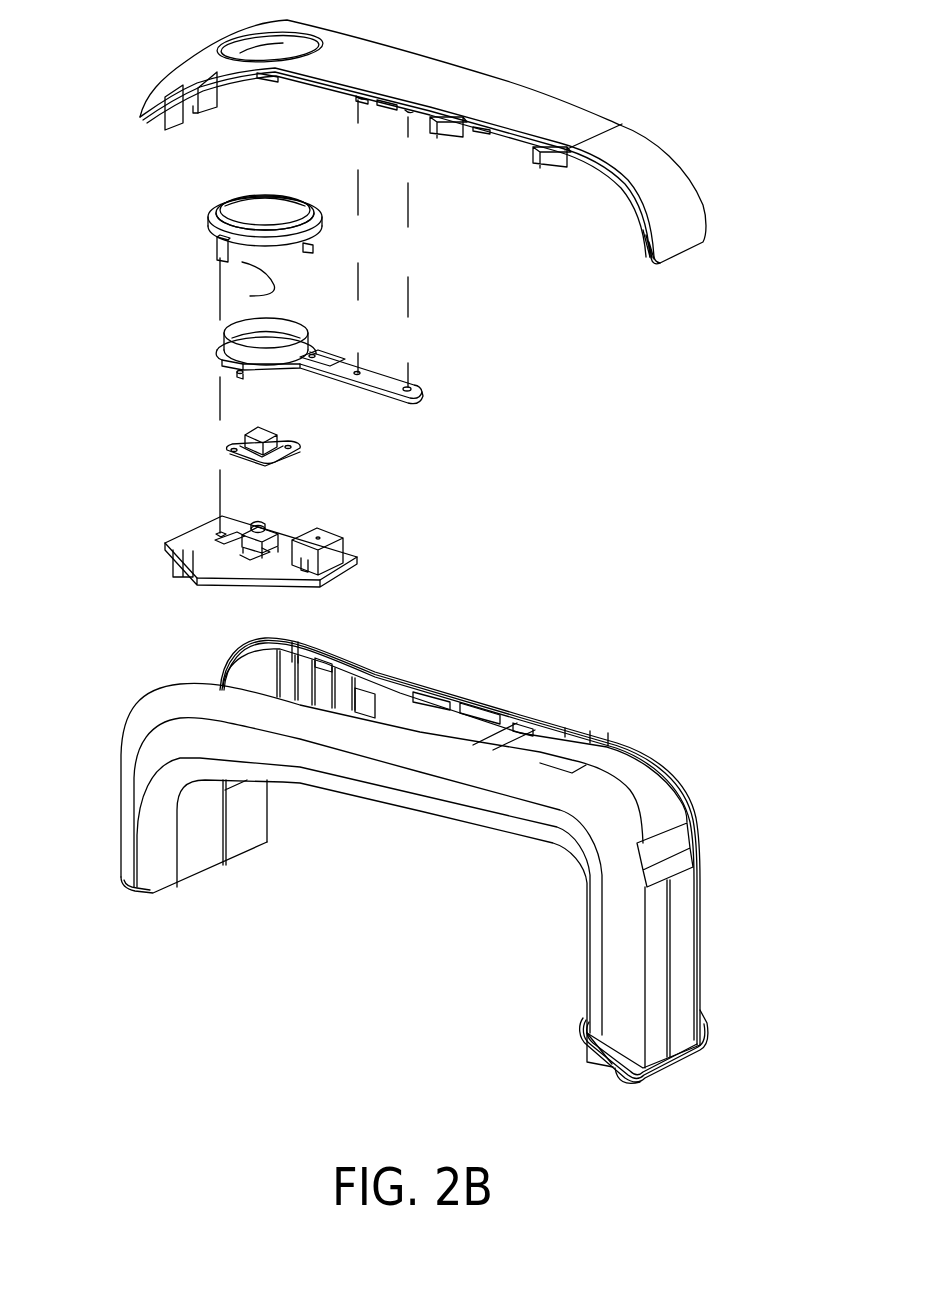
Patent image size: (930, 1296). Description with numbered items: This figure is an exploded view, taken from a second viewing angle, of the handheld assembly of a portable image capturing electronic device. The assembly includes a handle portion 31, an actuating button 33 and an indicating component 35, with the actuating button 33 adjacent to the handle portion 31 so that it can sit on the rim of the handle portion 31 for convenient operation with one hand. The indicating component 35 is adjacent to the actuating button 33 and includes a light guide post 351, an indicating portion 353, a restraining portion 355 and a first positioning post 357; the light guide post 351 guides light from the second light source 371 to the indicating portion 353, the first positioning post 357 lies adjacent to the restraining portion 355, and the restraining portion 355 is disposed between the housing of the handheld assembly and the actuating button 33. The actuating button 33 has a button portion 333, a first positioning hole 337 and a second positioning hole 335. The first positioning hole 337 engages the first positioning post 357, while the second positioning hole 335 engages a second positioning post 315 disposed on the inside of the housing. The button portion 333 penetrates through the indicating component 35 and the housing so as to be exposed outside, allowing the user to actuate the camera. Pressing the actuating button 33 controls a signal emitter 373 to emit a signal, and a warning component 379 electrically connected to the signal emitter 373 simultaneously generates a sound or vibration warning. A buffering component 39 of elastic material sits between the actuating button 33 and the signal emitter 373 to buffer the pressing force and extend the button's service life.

The handle portion 31 is at (457, 95).
The second positioning post 315 is at (363, 100).
The indicating component 35 is at (85, 176).
The indicating portion 353 is at (272, 205).
The restraining portion 355 is at (213, 236).
The light guide post 351 is at (217, 257).
The first positioning post 357 is at (268, 293).
The actuating button 33 is at (518, 273).
The button portion 333 is at (310, 335).
The first positioning hole 337 is at (320, 356).
The second positioning hole 335 is at (362, 372).
The buffering component 39 is at (300, 440).
The second light source 371 is at (220, 535).
The signal emitter 373 is at (273, 527).
The warning component 379 is at (328, 552).